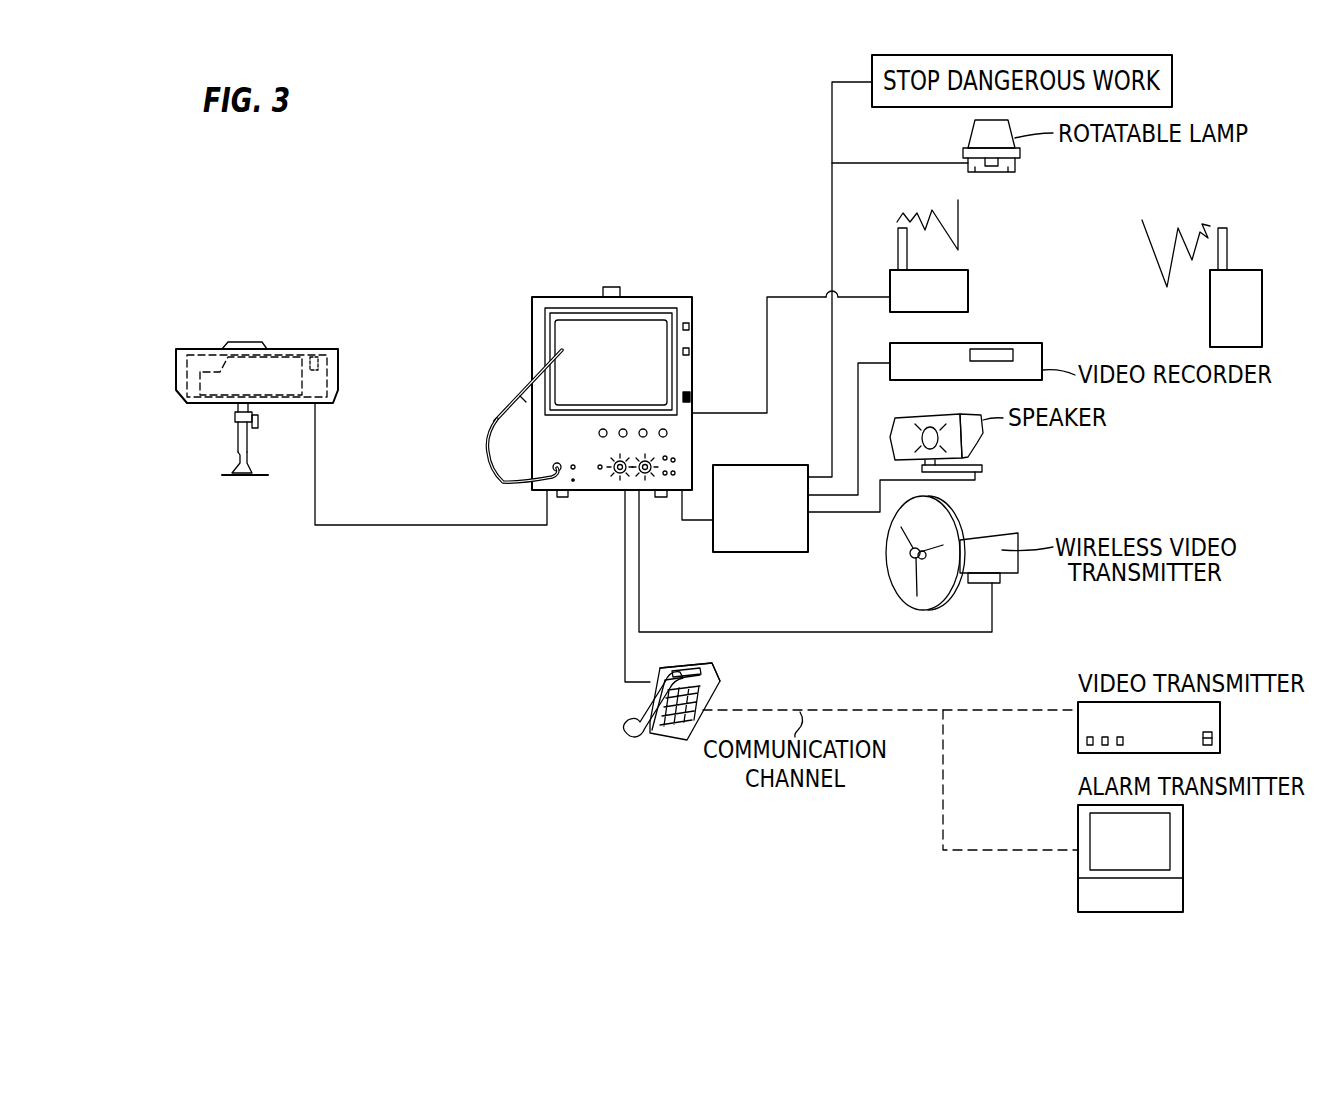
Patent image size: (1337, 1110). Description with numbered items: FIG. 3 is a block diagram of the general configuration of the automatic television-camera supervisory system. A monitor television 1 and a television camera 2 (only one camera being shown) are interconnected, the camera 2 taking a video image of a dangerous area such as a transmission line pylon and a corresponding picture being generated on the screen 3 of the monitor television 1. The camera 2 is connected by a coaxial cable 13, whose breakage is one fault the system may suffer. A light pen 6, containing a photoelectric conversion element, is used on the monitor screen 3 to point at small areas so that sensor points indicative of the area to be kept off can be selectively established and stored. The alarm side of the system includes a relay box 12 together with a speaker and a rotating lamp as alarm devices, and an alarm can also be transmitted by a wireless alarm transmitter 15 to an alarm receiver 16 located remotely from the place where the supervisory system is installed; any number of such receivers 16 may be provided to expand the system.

The monitor television 1 is at (623, 377).
The television camera 2 is at (312, 350).
The monitor television screen 3 is at (628, 333).
The light pen 6 is at (525, 382).
The relay box 12 is at (838, 513).
The coaxial cable 13 is at (398, 523).
The wireless alarm transmitter 15 is at (968, 285).
The alarm receiver 16 is at (1210, 328).